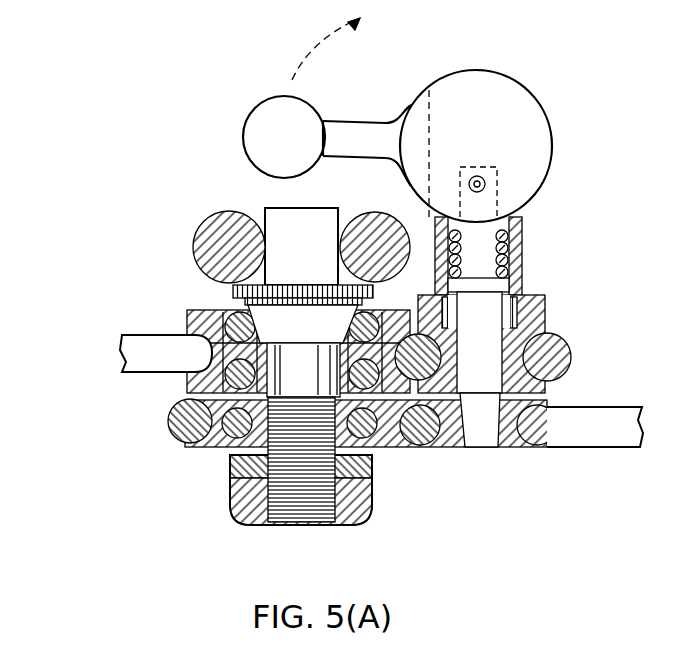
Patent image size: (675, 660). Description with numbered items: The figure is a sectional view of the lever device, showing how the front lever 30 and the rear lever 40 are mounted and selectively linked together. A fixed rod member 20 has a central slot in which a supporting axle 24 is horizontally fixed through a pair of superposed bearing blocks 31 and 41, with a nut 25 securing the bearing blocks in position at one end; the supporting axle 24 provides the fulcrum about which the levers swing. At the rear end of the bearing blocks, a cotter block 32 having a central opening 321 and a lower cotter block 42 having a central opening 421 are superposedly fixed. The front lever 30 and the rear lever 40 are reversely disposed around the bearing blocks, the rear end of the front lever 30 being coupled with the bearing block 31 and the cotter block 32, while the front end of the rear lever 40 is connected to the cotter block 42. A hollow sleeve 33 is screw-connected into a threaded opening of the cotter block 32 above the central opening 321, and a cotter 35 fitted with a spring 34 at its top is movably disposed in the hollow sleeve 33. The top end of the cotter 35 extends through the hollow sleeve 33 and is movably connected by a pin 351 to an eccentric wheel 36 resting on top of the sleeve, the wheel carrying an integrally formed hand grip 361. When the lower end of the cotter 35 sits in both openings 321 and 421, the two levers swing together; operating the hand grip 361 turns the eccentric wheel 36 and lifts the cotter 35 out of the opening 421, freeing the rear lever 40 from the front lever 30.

The fixed rod member 20 is at (194, 244).
The supporting axle 24 is at (297, 223).
The nut 25 is at (242, 515).
The front lever 30 is at (128, 352).
The bearing block 31 is at (189, 318).
The cotter block 32 is at (563, 363).
The hollow sleeve 33 is at (522, 267).
The spring 34 is at (509, 233).
The cotter 35 is at (488, 352).
The eccentric wheel 36 is at (533, 113).
The pin 351 is at (486, 185).
The hand grip 361 is at (365, 130).
The rear lever 40 is at (603, 433).
The bearing block 41 is at (202, 449).
The cotter block 42 is at (540, 446).
The central opening 321 is at (432, 452).
The central opening 421 is at (480, 444).